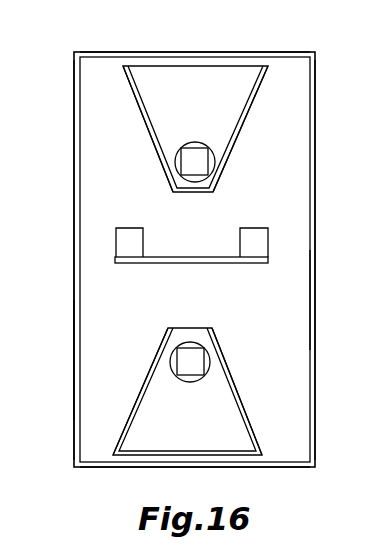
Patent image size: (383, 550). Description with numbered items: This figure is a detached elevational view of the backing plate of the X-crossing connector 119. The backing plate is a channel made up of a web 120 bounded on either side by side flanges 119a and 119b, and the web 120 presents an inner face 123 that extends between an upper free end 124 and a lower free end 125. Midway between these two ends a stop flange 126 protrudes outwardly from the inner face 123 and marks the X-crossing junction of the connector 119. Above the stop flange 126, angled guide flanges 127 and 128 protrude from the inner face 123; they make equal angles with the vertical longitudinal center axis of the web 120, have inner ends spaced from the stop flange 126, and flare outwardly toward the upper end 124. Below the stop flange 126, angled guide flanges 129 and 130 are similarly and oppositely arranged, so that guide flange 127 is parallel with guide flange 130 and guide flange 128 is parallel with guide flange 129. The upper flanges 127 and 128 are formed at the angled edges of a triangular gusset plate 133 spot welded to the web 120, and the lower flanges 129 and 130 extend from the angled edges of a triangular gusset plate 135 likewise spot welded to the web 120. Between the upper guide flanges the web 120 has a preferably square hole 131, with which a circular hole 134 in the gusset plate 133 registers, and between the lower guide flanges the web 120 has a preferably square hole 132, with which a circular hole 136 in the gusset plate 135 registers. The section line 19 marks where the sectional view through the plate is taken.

The section line 19 is at (68, 245).
The X-crossing connector 119 is at (70, 350).
The side flange 119a is at (74, 153).
The side flange 119b is at (316, 163).
The web 120 is at (287, 466).
The inner face 123 is at (281, 300).
The upper free end 124 is at (187, 52).
The lower free end 125 is at (110, 464).
The stop flange 126 is at (155, 257).
The angled guide flange 127 is at (143, 127).
The angled guide flange 128 is at (247, 127).
The angled guide flange 129 is at (148, 373).
The angled guide flange 130 is at (237, 378).
The square hole 131 is at (195, 148).
The square hole 132 is at (190, 345).
The triangular gusset plate 133 is at (234, 76).
The circular hole 134 is at (214, 161).
The triangular gusset plate 135 is at (211, 448).
The circular hole 136 is at (190, 383).